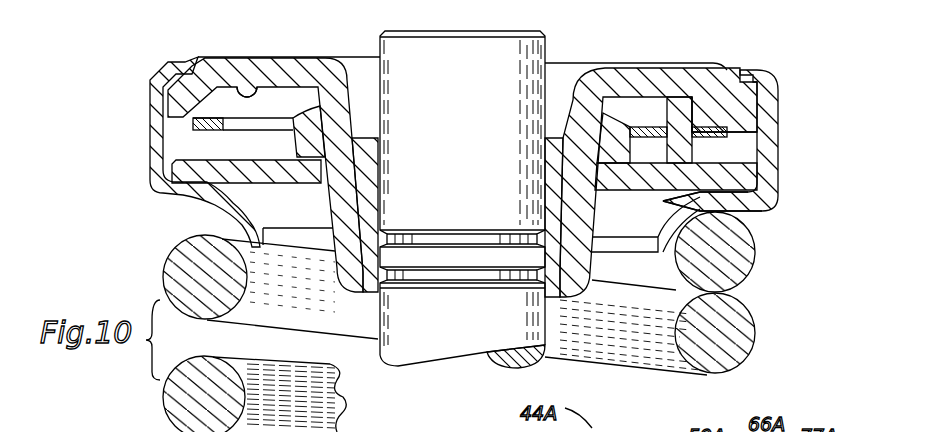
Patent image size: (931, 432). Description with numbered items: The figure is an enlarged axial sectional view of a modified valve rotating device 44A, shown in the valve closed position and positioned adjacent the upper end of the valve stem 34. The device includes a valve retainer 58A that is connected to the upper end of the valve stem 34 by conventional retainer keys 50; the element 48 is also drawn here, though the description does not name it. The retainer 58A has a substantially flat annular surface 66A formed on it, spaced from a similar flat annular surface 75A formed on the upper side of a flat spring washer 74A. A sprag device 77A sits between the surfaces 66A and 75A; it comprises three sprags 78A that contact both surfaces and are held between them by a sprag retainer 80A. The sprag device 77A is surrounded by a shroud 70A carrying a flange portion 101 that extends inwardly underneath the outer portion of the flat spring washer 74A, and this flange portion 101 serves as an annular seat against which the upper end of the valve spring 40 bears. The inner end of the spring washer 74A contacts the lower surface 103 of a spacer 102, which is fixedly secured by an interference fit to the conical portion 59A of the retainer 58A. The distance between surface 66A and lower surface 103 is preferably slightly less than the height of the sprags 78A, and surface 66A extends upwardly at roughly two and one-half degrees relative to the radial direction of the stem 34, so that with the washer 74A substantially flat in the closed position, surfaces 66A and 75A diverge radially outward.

The valve rotating device 44A is at (136, 60).
The flat annular surface 75A is at (187, 157).
The valve retainer 58A is at (315, 75).
The flat annular surface 66A is at (253, 97).
The conical portion 59A is at (330, 210).
The retainer keys 50 is at (370, 147).
The shaft 48 is at (440, 240).
The valve stem 34 is at (428, 350).
The spacer 102 is at (577, 80).
The sprag device 77A is at (702, 110).
The sprags 78A is at (683, 104).
The sprag retainer 80A is at (707, 134).
The lower surface 103 is at (621, 165).
The shroud 70A is at (773, 135).
The flat spring washer 74A is at (773, 193).
The flange portion 101 is at (757, 248).
The valve spring 40 is at (743, 342).